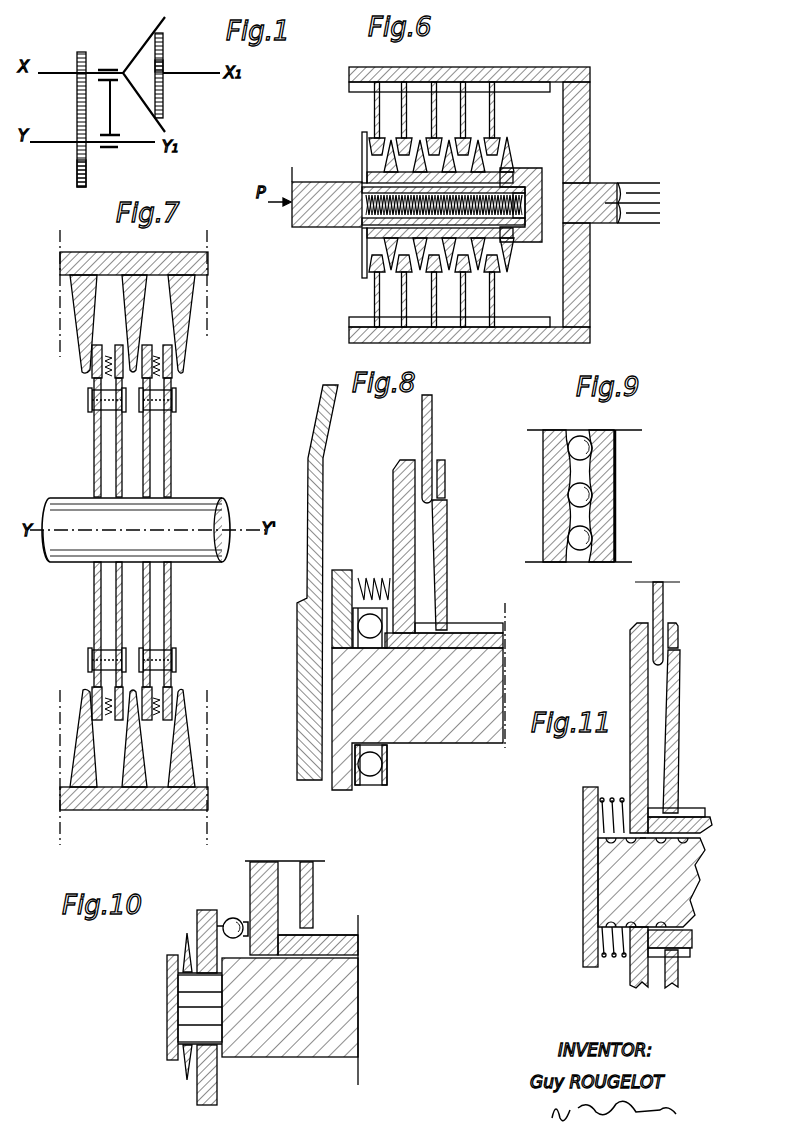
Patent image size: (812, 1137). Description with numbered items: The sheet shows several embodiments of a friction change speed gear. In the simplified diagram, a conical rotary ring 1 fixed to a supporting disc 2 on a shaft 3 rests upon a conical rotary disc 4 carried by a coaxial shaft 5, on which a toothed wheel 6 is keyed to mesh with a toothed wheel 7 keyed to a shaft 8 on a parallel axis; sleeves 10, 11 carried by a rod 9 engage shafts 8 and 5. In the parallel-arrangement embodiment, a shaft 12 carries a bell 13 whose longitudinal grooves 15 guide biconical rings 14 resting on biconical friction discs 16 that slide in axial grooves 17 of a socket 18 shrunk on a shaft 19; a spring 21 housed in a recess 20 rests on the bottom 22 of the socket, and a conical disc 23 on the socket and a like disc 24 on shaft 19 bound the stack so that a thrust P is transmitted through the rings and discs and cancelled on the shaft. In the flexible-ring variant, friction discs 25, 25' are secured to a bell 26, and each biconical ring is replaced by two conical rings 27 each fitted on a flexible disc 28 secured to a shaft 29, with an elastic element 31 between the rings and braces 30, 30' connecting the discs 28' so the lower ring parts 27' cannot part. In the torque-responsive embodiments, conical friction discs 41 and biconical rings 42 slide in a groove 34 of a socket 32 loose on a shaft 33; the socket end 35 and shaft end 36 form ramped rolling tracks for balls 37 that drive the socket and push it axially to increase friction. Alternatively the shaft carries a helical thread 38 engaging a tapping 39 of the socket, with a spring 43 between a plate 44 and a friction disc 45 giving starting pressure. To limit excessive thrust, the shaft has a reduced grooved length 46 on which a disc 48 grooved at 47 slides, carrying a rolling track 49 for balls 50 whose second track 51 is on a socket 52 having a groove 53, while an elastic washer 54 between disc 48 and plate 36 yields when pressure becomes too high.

In FIG. 1, the conical rotary ring 1 is at (163, 41).
In FIG. 1, the supporting disc 2 is at (163, 66).
In FIG. 1, the shaft 3 is at (203, 75).
In FIG. 1, the conical rotary disc 4 is at (146, 44).
In FIG. 1, the shaft 5 is at (50, 73).
In FIG. 1, the toothed wheel 6 is at (80, 52).
In FIG. 1, the toothed wheel 7 is at (77, 174).
In FIG. 1, the shaft 8 is at (52, 141).
In FIG. 1, the rod 9 is at (112, 112).
In FIG. 1, the sleeve 10 is at (112, 150).
In FIG. 1, the sleeve 11 is at (108, 68).
In FIG. 6, the shaft 12 is at (600, 214).
In FIG. 6, the bell 13 is at (460, 73).
In FIG. 6, the biconical rings 14 is at (403, 138).
In FIG. 6, the longitudinal grooves 15 is at (478, 88).
In FIG. 6, the biconical friction discs 16 is at (367, 257).
In FIG. 6, the axial grooves 17 is at (467, 172).
In FIG. 6, the socket 18 is at (432, 177).
In FIG. 6, the shaft 19 is at (320, 208).
In FIG. 6, the recess 20 is at (405, 213).
In FIG. 6, the spring 21 is at (507, 212).
In FIG. 6, the bottom 22 is at (537, 197).
In FIG. 6, the conical disc 23 is at (360, 164).
In FIG. 6, the conical disc 24 is at (510, 148).
In FIG. 7, the friction discs 25 is at (140, 324).
In FIG. 7, the friction discs 25' is at (117, 749).
In FIG. 7, the bell 26 is at (126, 258).
In FIG. 7, the conical rings 27 is at (137, 364).
In FIG. 7, the conical ring part 27' is at (97, 703).
In FIG. 7, the flexible disc 28 is at (131, 437).
In FIG. 7, the flexible disc 28' is at (108, 624).
In FIG. 7, the shaft 29 is at (207, 510).
In FIG. 7, the braces 30 is at (131, 400).
In FIG. 7, the braces 30' is at (110, 660).
In FIG. 7, the elastic element 31 is at (108, 355).
In FIG. 8, the socket 32 is at (478, 645).
In FIG. 11, the socket 32 is at (707, 828).
In FIG. 8, the shaft 33 is at (483, 678).
In FIG. 11, the shaft 33 is at (648, 882).
In FIG. 10, the shaft 33 is at (267, 1040).
In FIG. 8, the groove 34 is at (460, 630).
In FIG. 11, the groove 34 is at (693, 813).
In FIG. 8, the end of socket 35 is at (387, 580).
In FIG. 9, the end of socket 35 is at (600, 468).
In FIG. 8, the end of shaft 36 is at (337, 570).
In FIG. 9, the end of shaft 36 is at (560, 480).
In FIG. 10, the end of shaft 36 is at (168, 983).
In FIG. 8, the balls 37 is at (370, 625).
In FIG. 9, the balls 37 is at (570, 440).
In FIG. 11, the helical thread 38 is at (673, 835).
In FIG. 11, the tapping 39 is at (702, 833).
In FIG. 8, the conical friction discs 41 is at (428, 424).
In FIG. 11, the conical friction discs 41 is at (667, 606).
In FIG. 8, the biconical rings 42 is at (446, 542).
In FIG. 11, the biconical rings 42 is at (670, 718).
In FIG. 11, the spring 43 is at (612, 798).
In FIG. 11, the plate 44 is at (583, 837).
In FIG. 8, the friction disc 45 is at (405, 507).
In FIG. 11, the friction disc 45 is at (638, 702).
In FIG. 10, the reduced-diameter length 46 is at (193, 1020).
In FIG. 10, the grooves of disc 47 is at (193, 963).
In FIG. 10, the disc 48 is at (202, 927).
In FIG. 10, the rolling track 49 is at (210, 912).
In FIG. 10, the balls 50 is at (230, 920).
In FIG. 10, the second rolling track 51 is at (239, 921).
In FIG. 10, the socket 52 is at (333, 948).
In FIG. 10, the groove 53 is at (335, 930).
In FIG. 10, the elastic washer 54 is at (185, 1060).